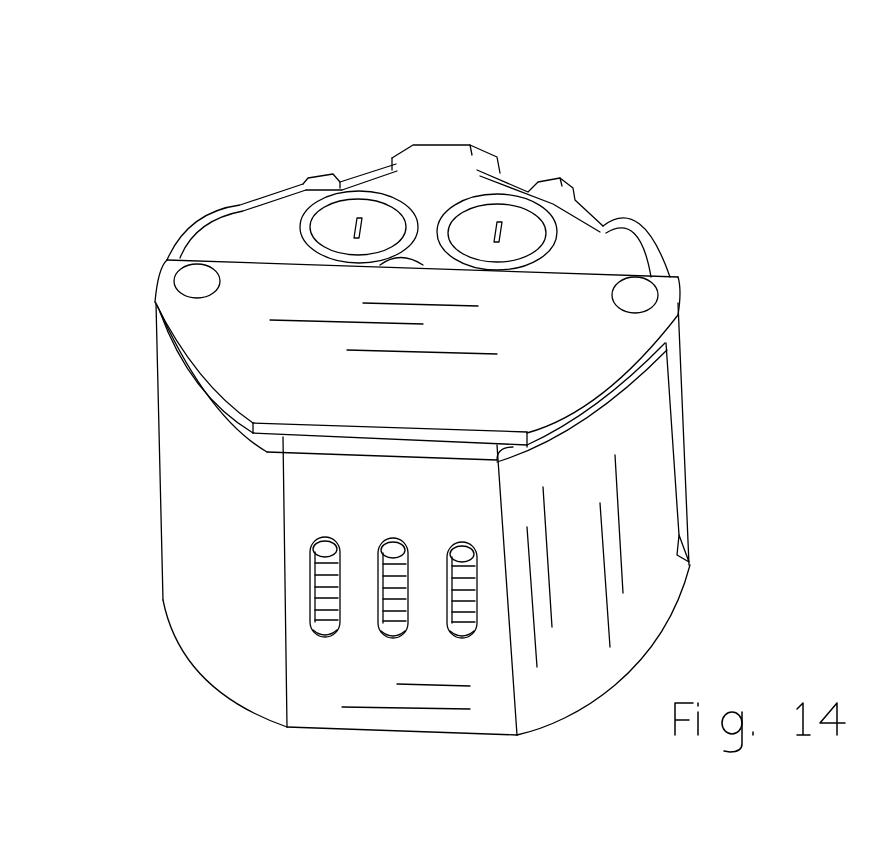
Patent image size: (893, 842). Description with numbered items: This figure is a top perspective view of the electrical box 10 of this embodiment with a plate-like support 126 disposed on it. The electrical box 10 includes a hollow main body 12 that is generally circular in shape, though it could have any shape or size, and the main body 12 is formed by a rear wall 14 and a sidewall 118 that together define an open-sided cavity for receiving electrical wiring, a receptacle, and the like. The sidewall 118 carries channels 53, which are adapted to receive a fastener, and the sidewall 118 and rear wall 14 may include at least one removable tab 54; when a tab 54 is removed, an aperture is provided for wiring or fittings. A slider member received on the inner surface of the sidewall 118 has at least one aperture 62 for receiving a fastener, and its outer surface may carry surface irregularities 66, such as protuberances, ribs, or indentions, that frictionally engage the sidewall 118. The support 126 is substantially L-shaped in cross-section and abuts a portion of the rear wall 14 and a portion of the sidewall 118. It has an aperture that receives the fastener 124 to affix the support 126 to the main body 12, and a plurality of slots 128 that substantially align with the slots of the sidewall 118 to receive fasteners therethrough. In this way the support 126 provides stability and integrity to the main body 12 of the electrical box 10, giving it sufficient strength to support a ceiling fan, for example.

The electrical box 10 is at (108, 121).
The main body 12 is at (156, 508).
The rear wall 14 is at (270, 237).
The channels 53 is at (680, 415).
The removable tab 54 is at (381, 228).
The aperture 62 is at (322, 537).
The surface irregularities 66 is at (467, 590).
The sidewall 118 is at (163, 568).
The fastener 124 is at (193, 276).
The plate-like support 126 is at (173, 328).
The slots 128 is at (317, 637).